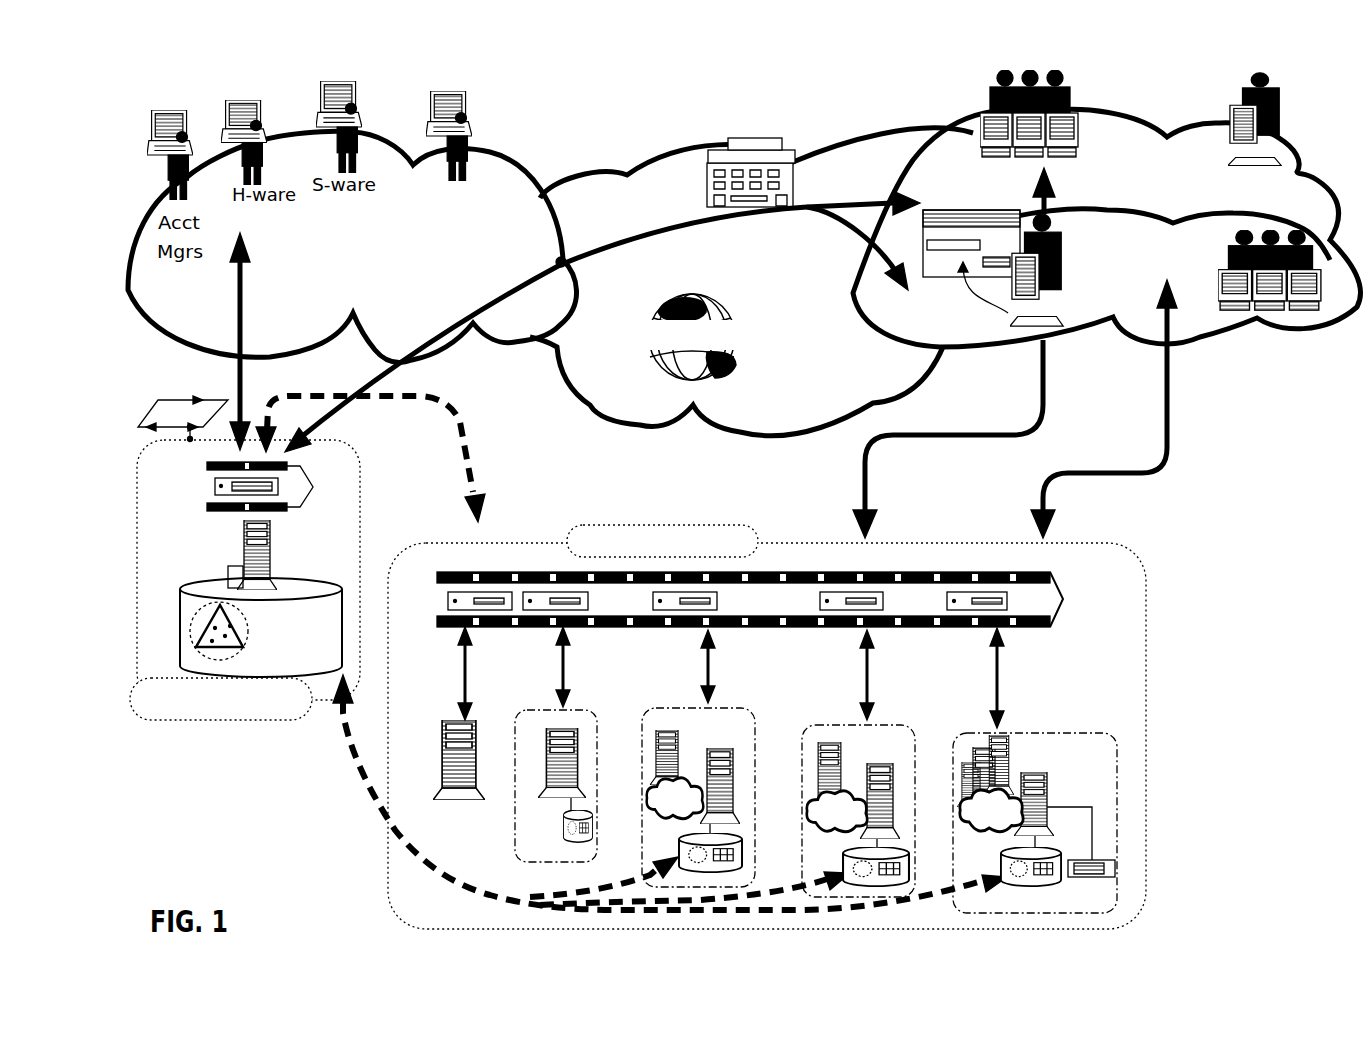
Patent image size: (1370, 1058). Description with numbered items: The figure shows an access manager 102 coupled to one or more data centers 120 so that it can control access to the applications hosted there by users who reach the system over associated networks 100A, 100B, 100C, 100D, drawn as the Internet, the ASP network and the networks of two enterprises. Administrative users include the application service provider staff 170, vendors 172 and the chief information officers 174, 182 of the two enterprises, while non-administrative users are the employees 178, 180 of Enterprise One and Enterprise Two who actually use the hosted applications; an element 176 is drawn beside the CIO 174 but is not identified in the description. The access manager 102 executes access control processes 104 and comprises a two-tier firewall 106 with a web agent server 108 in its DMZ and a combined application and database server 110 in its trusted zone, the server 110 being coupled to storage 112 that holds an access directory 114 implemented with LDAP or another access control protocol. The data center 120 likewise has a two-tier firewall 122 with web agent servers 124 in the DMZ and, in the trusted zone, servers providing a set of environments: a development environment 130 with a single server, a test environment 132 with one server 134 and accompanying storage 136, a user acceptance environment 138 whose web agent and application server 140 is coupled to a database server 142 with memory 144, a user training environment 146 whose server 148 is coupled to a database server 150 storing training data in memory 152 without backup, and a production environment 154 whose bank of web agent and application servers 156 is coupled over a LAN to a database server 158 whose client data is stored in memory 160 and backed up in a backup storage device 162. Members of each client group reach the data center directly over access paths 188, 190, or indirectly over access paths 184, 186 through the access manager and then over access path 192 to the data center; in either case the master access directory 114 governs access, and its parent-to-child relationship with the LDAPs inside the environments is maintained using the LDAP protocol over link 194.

The network 100A is at (590, 407).
The network 100B is at (503, 187).
The network 100C is at (1300, 333).
The network 100D is at (940, 143).
The access manager 102 is at (360, 553).
The access control processes 104 is at (165, 403).
The firewall 106 is at (280, 486).
The web agent server 108 is at (213, 483).
The combined application and database server 110 is at (243, 541).
The storage 112 is at (327, 587).
The access directory 114 is at (247, 630).
The data center 120 is at (1130, 580).
The two-tier firewall 122 is at (1065, 599).
The web agent servers 124 is at (437, 601).
The development environment 130 is at (455, 718).
The test environment 132 is at (540, 712).
The server 134 is at (546, 738).
The storage 136 is at (565, 817).
The user acceptance environment 138 is at (665, 707).
The server 140 is at (677, 740).
The server 142 is at (714, 752).
The memory 144 is at (705, 835).
The user training environment 146 is at (830, 724).
The server 148 is at (840, 752).
The server 150 is at (880, 763).
The memory 152 is at (875, 850).
The production environment 154 is at (950, 735).
The bank of servers 156 is at (1008, 735).
The database server 158 is at (1040, 772).
The memory 160 is at (1043, 847).
The backup storage device 162 is at (1095, 877).
The ASP staff 170 is at (465, 122).
The vendors 172 is at (790, 143).
The CIO 174 is at (1057, 300).
The display window 176 is at (947, 207).
The employees 178 is at (1221, 267).
The employees 180 is at (1078, 107).
The CIO 182 is at (1277, 137).
The access path 184 is at (237, 323).
The access path 186 is at (453, 330).
The access path 188 is at (862, 480).
The access path 190 is at (1045, 483).
The access path 192 is at (470, 462).
The link 194 is at (370, 780).